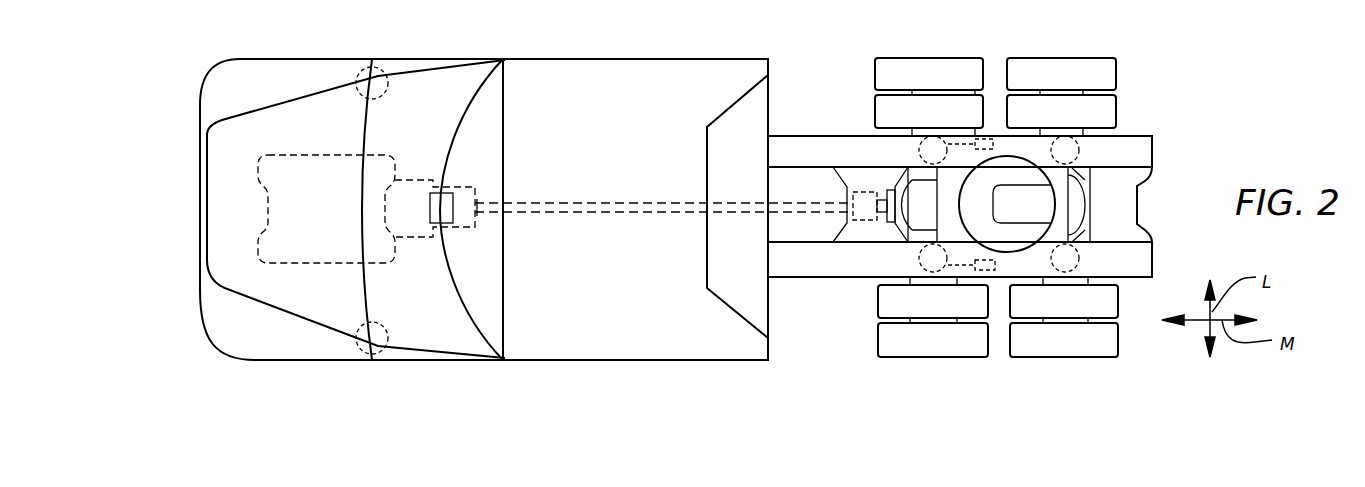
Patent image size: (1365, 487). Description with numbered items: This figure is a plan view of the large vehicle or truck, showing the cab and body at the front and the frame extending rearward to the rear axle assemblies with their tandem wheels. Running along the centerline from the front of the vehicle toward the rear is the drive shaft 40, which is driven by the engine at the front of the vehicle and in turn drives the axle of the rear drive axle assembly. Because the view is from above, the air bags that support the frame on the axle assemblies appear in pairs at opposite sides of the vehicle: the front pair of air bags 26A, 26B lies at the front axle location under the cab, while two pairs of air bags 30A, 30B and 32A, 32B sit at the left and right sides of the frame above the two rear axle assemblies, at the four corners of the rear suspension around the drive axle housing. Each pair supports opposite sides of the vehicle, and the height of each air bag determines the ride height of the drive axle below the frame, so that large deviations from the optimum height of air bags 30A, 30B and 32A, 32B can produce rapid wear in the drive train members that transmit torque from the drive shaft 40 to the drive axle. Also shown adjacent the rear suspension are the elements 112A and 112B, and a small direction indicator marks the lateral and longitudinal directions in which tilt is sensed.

The air bag 26A is at (372, 62).
The air bag 26B is at (372, 358).
The drive shaft 40 is at (626, 203).
The air bag 30A is at (920, 152).
The air bag 30B is at (915, 257).
The air bag 32A is at (1080, 150).
The air bag 32B is at (1080, 259).
The first drive motor 112A is at (970, 140).
The second drive motor 112B is at (962, 272).